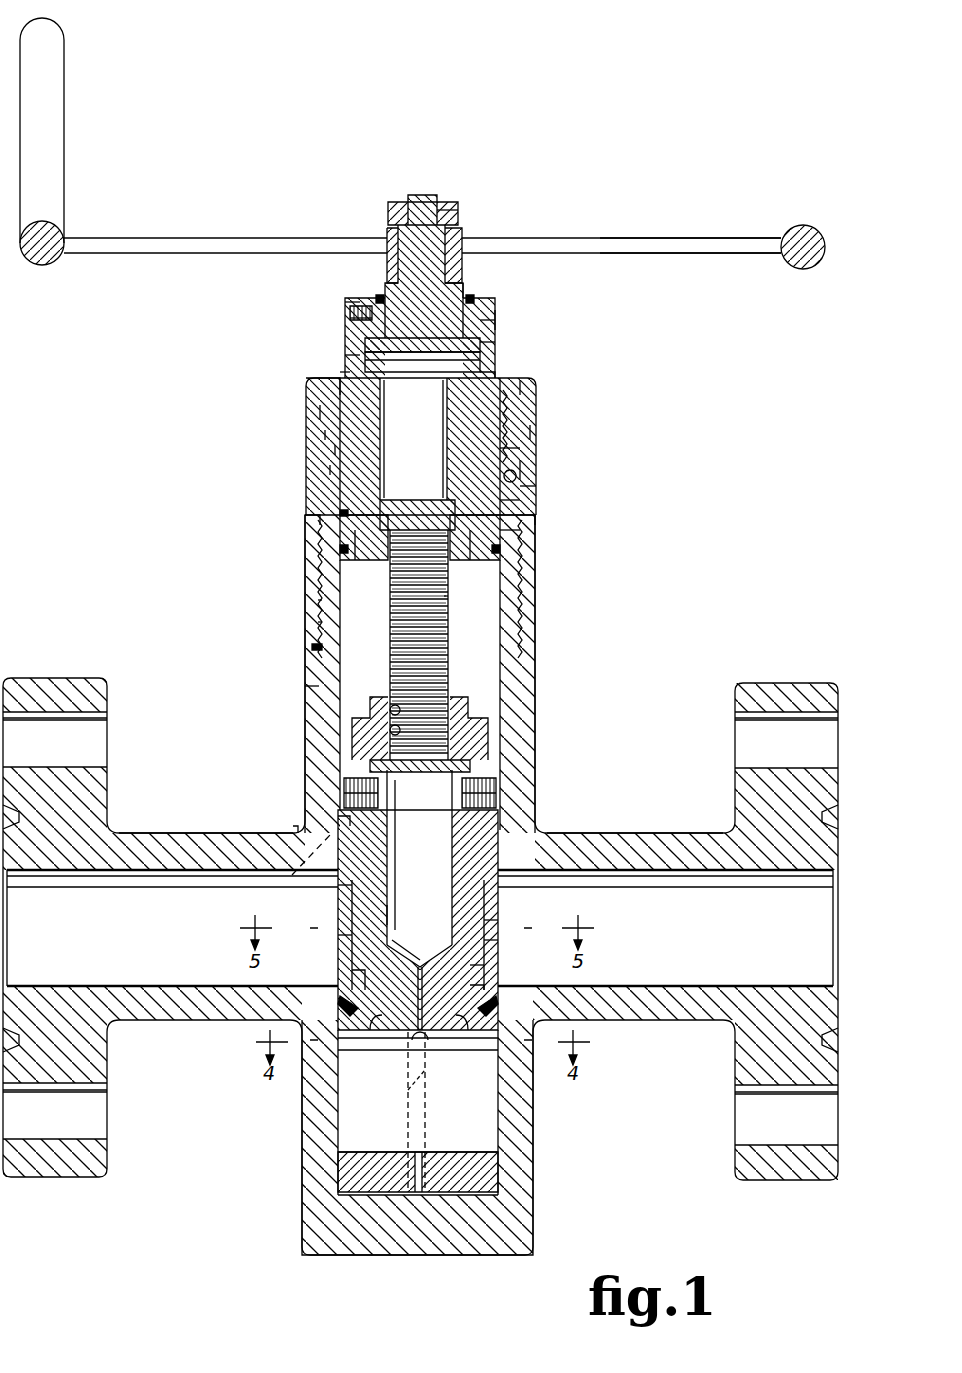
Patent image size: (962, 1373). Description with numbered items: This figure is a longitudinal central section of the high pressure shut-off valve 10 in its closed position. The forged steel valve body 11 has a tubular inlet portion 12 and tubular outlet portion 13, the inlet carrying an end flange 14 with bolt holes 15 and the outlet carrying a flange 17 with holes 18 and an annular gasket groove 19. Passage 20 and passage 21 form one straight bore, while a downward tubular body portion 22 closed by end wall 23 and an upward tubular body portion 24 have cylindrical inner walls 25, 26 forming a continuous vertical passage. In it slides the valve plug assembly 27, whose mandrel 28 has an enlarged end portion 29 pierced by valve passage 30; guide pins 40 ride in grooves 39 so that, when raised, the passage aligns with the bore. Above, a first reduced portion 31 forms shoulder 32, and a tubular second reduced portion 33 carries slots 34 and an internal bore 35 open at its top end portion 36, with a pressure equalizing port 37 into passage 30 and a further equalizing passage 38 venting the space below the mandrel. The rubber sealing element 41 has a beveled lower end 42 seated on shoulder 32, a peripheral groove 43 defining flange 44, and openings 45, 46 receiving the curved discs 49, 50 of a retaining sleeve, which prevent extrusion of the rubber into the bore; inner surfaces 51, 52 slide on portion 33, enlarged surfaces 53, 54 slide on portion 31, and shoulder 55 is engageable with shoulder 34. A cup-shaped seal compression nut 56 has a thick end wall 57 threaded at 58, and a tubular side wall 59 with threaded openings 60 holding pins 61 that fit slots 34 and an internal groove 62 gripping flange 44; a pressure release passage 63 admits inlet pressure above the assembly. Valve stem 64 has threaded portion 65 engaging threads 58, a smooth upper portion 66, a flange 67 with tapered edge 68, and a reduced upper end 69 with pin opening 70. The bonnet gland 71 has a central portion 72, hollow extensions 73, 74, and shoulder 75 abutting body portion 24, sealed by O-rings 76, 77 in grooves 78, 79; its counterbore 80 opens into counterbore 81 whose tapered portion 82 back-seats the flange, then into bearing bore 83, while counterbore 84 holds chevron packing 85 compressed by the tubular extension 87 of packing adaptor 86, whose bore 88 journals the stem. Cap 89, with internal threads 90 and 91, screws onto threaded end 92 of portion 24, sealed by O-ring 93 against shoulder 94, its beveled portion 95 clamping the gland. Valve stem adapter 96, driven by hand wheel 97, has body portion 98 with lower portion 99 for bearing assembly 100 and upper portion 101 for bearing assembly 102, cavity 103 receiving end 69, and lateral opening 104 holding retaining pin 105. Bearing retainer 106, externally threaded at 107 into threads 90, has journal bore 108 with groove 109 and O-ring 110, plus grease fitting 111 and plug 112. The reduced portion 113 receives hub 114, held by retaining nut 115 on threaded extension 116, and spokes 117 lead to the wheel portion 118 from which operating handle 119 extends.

The valve 10 is at (240, 608).
The valve body 11 is at (298, 830).
The tubular inlet portion 12 is at (155, 835).
The tubular outlet portion 13 is at (700, 850).
The end flange 14 is at (48, 688).
The holes or apertures 15 is at (95, 1108).
The flange 17 is at (785, 688).
The holes or apertures 18 is at (745, 1120).
The annular groove 19 is at (840, 817).
The tubular passage 20 is at (75, 875).
The tubular passage 21 is at (690, 875).
The tubular body portion 22 is at (303, 1172).
The end wall 23 is at (395, 1256).
The tubular body portion 24 is at (320, 742).
The cylindrical inner wall 25 is at (498, 1105).
The cylindrical inner wall 26 is at (500, 740).
The valve plug assembly 27 is at (505, 925).
The mandrel 28 is at (484, 972).
The enlarged cylindrical end portion 29 is at (498, 1176).
The valve passage 30 is at (338, 1143).
The first portion of reduced diameter 31 is at (352, 976).
The shoulder 32 is at (352, 1034).
The second portion of reduced diameter 33 is at (352, 916).
The slots or grooves 34 is at (360, 985).
The internal bore 35 is at (452, 866).
The top end portion 36 is at (452, 775).
The pressure equalizing port 37 is at (430, 1036).
The pressure equalizing port or passage 38 is at (408, 1128).
The longitudinally extending grooves 39 is at (425, 1129).
The pins 40 is at (395, 1092).
The sealing element 41 is at (520, 840).
The beveled lower end portion 42 is at (485, 1034).
The peripheral groove 43 is at (498, 896).
The flange 44 is at (496, 816).
The opening 45 is at (340, 894).
The opening 46 is at (484, 986).
The cylindrically curved disc 49 is at (338, 936).
The cylindrically curved disc 50 is at (498, 941).
The inner surface 51 is at (446, 915).
The inner surface 52 is at (452, 894).
The lower enlarged cylindrical surface 53 is at (385, 1045).
The lower enlarged cylindrical surface 54 is at (460, 1045).
The shoulder 55 is at (428, 937).
The seal compression nut 56 is at (352, 716).
The thick end wall portion 57 is at (466, 697).
The internal threads 58 is at (395, 700).
The tubular side wall 59 is at (470, 773).
The apertures or openings 60 is at (496, 793).
The pins 61 is at (344, 800).
The internal groove 62 is at (338, 820).
The pressure release passage 63 is at (315, 883).
The valve stem 64 is at (378, 610).
The threaded portion 65 is at (449, 648).
The smooth cylindrical portion 66 is at (320, 490).
The flange 67 is at (370, 548).
The tapered edge portion 68 is at (450, 602).
The extreme upper end 69 is at (480, 340).
The opening 70 is at (480, 360).
The valve stem bonnet gland 71 is at (538, 492).
The central portion 72 is at (530, 470).
The hollow extension 73 is at (520, 450).
The hollow extension 74 is at (520, 540).
The shoulder 75 is at (308, 530).
The O-ring 76 is at (525, 520).
The O-ring 77 is at (500, 556).
The peripheral groove 78 is at (520, 501).
The peripheral groove 79 is at (528, 576).
The counterbore 80 is at (462, 552).
The counterbore 81 is at (340, 550).
The tapered portion 82 is at (340, 512).
The smaller bore 83 is at (455, 500).
The counterbore 84 is at (335, 450).
The valve stem packing 85 is at (330, 470).
The packing adaptor 86 is at (320, 412).
The tubular extension 87 is at (325, 436).
The bore 88 is at (440, 432).
The cap 89 is at (306, 395).
The internal threads 90 is at (340, 372).
The internal threads 91 is at (318, 606).
The threaded end portion 92 is at (318, 626).
The O-ring or gasket 93 is at (312, 648).
The shoulder 94 is at (305, 690).
The internally beveled portion 95 is at (516, 476).
The valve stem adapter 96 is at (468, 290).
The hand wheel 97 is at (300, 232).
The central cylindrical body portion 98 is at (360, 350).
The lower cylindrical portion 99 is at (522, 415).
The bearing assembly 100 is at (520, 390).
The upper cylindrical portion 101 is at (376, 296).
The bearing assembly 102 is at (495, 345).
The internal bore or cavity 103 is at (390, 395).
The laterally extending opening 104 is at (345, 355).
The valve stem retaining pin 105 is at (495, 378).
The bearing retainer 106 is at (495, 315).
The external threads 107 is at (530, 432).
The internal bore 108 is at (495, 320).
The annular groove 109 is at (350, 302).
The O-ring 110 is at (474, 300).
The grease fitting 111 is at (350, 312).
The plug 112 is at (350, 318).
The portion of reduced diameter 113 is at (392, 266).
The cylindrical hub 114 is at (388, 240).
The retaining nut 115 is at (455, 204).
The threaded extension 116 is at (400, 204).
The spokes 117 is at (690, 238).
The annular wheel portion 118 is at (800, 270).
The operating handle 119 is at (60, 92).